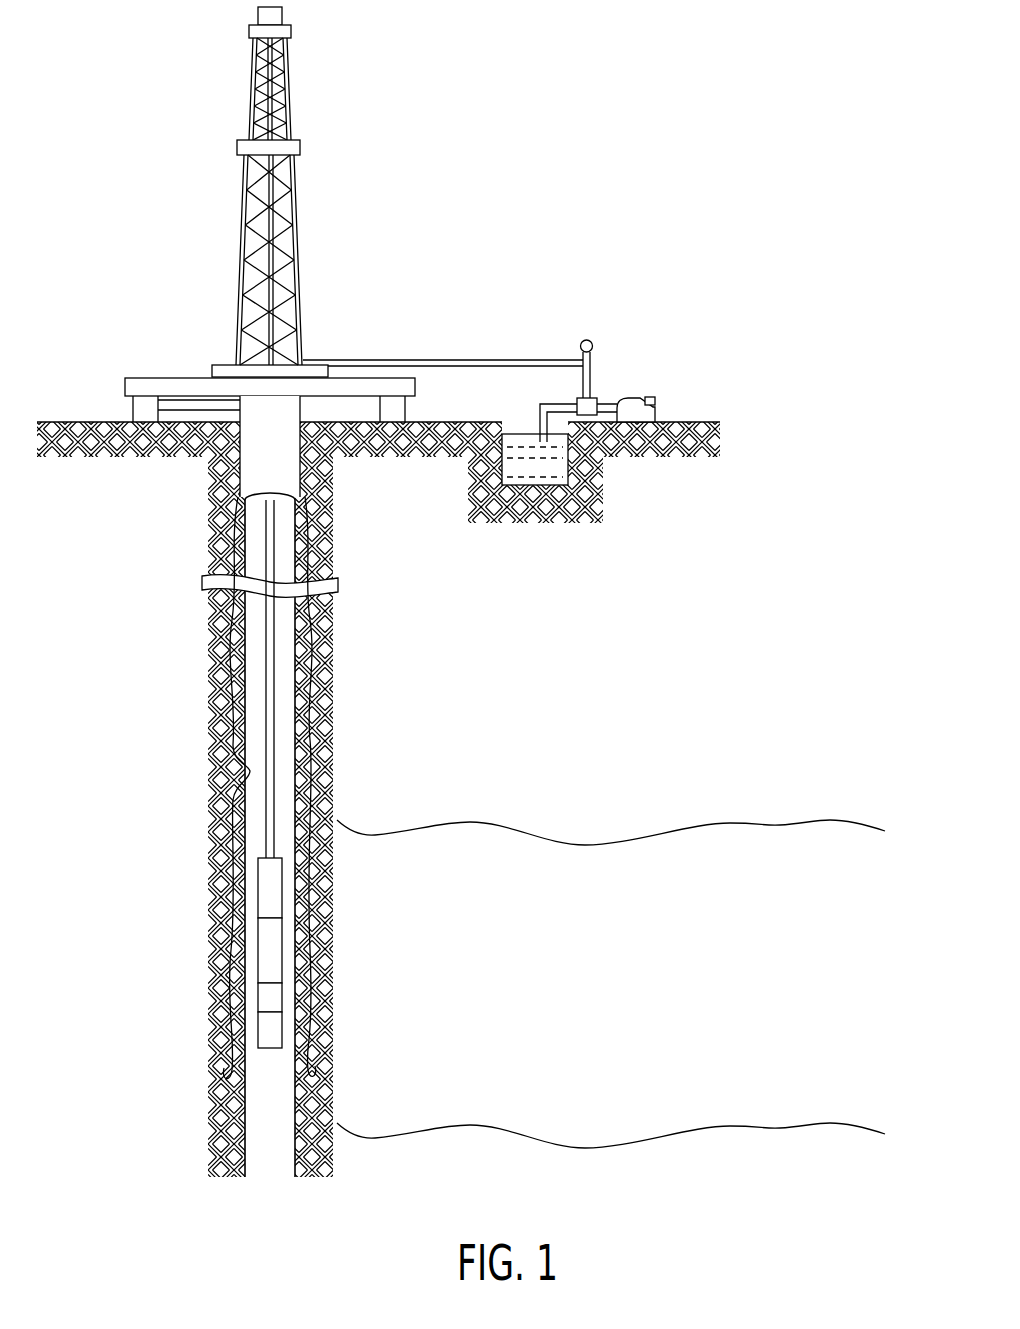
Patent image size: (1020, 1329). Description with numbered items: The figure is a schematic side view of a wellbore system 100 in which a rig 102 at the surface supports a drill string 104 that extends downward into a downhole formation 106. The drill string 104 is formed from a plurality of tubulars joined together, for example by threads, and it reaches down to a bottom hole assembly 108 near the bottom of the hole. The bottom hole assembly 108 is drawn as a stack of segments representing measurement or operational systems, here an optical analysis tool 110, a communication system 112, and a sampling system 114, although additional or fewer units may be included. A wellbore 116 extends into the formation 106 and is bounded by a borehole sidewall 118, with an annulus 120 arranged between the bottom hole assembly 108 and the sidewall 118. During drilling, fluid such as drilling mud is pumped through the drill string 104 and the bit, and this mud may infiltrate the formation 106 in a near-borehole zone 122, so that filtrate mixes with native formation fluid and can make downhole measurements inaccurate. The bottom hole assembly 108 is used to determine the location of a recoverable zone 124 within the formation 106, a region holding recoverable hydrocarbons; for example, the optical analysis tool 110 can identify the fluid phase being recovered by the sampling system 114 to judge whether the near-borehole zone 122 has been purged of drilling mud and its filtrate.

The wellbore system 100 is at (461, 592).
The rig 102 is at (300, 247).
The drill string 104 is at (273, 722).
The downhole formation 106 is at (630, 750).
The bottom hole assembly 108 is at (356, 1010).
The optical analysis tool 110 is at (266, 891).
The communication system 112 is at (266, 952).
The sampling system 114 is at (266, 998).
The wellbore 116 is at (193, 658).
The borehole sidewall 118 is at (240, 763).
The annulus 120 is at (287, 643).
The near-borehole zone 122 is at (325, 548).
The recoverable zone 124 is at (627, 986).